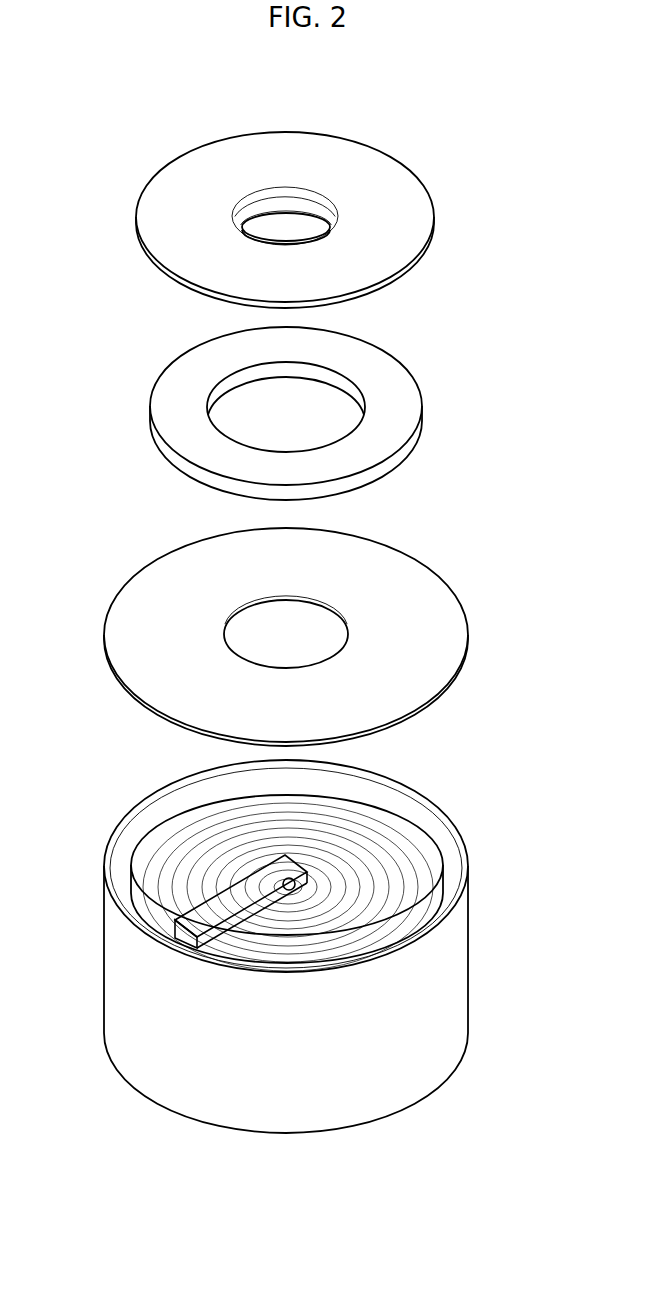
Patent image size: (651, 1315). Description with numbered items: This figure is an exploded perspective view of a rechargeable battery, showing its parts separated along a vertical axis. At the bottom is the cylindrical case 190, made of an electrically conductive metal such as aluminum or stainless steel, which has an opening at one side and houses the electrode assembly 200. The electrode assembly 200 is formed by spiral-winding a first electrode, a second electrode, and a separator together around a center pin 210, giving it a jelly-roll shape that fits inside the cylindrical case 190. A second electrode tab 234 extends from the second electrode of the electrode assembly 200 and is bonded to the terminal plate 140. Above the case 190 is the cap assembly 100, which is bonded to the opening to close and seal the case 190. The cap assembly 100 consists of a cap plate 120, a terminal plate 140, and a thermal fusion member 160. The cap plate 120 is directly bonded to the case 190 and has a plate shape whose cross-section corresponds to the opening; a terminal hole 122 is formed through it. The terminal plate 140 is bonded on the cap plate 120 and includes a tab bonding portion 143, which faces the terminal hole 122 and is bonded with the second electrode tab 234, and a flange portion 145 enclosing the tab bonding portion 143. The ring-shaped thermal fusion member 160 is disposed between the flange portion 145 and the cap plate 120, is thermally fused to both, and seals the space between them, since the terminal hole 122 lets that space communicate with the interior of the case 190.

The cap assembly 100 is at (340, 628).
The cap plate 120 is at (334, 632).
The terminal hole 122 is at (327, 610).
The terminal plate 140 is at (334, 193).
The tab bonding portion 143 is at (285, 225).
The flange portion 145 is at (393, 171).
The thermal fusion member 160 is at (430, 407).
The case 190 is at (458, 988).
The electrode assembly 200 is at (393, 863).
The center pin 210 is at (296, 884).
The second electrode tab 234 is at (200, 910).